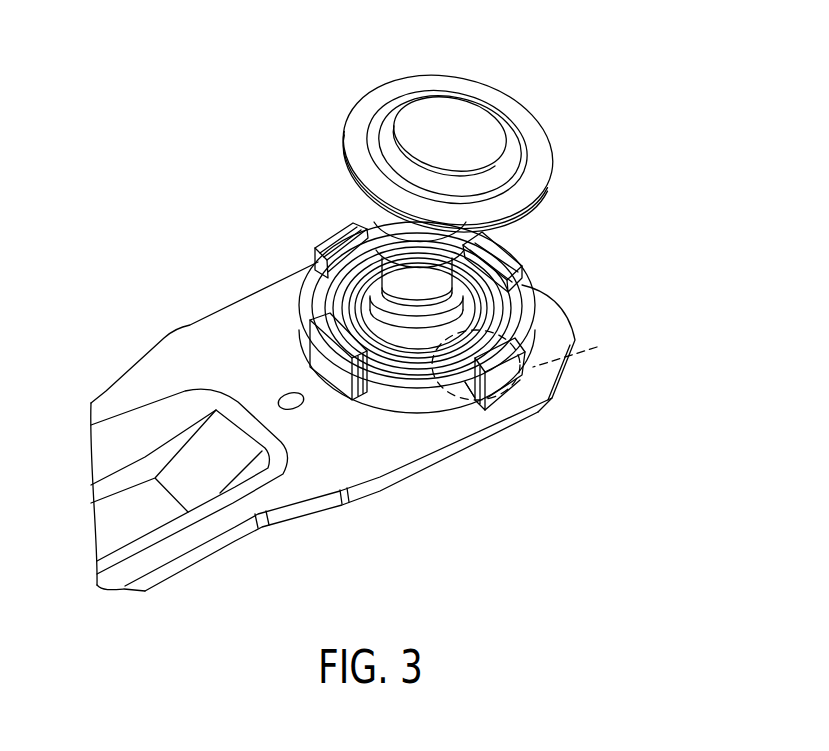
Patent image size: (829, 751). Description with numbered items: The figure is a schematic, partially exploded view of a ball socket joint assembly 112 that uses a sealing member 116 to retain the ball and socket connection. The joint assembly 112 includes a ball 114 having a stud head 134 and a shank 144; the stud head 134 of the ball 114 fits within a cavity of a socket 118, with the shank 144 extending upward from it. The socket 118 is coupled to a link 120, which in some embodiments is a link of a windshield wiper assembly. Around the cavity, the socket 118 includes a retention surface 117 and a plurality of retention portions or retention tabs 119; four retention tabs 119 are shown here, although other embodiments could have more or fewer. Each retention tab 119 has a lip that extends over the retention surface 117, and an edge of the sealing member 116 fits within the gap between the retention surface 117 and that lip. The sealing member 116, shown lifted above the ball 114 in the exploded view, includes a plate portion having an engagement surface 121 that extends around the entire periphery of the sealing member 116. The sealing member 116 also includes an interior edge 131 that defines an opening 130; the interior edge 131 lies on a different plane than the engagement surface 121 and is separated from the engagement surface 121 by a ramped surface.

The ball socket joint assembly 112 is at (640, 95).
The ball 114 is at (395, 343).
The sealing member 116 is at (320, 152).
The retention surface 117 is at (391, 390).
The socket 118 is at (506, 398).
The retention tabs 119 is at (333, 335).
The link 120 is at (320, 494).
The engagement surface 121 is at (538, 172).
The opening 130 is at (462, 132).
The interior edge 131 is at (398, 103).
The stud head 134 is at (418, 345).
The shank 144 is at (440, 280).